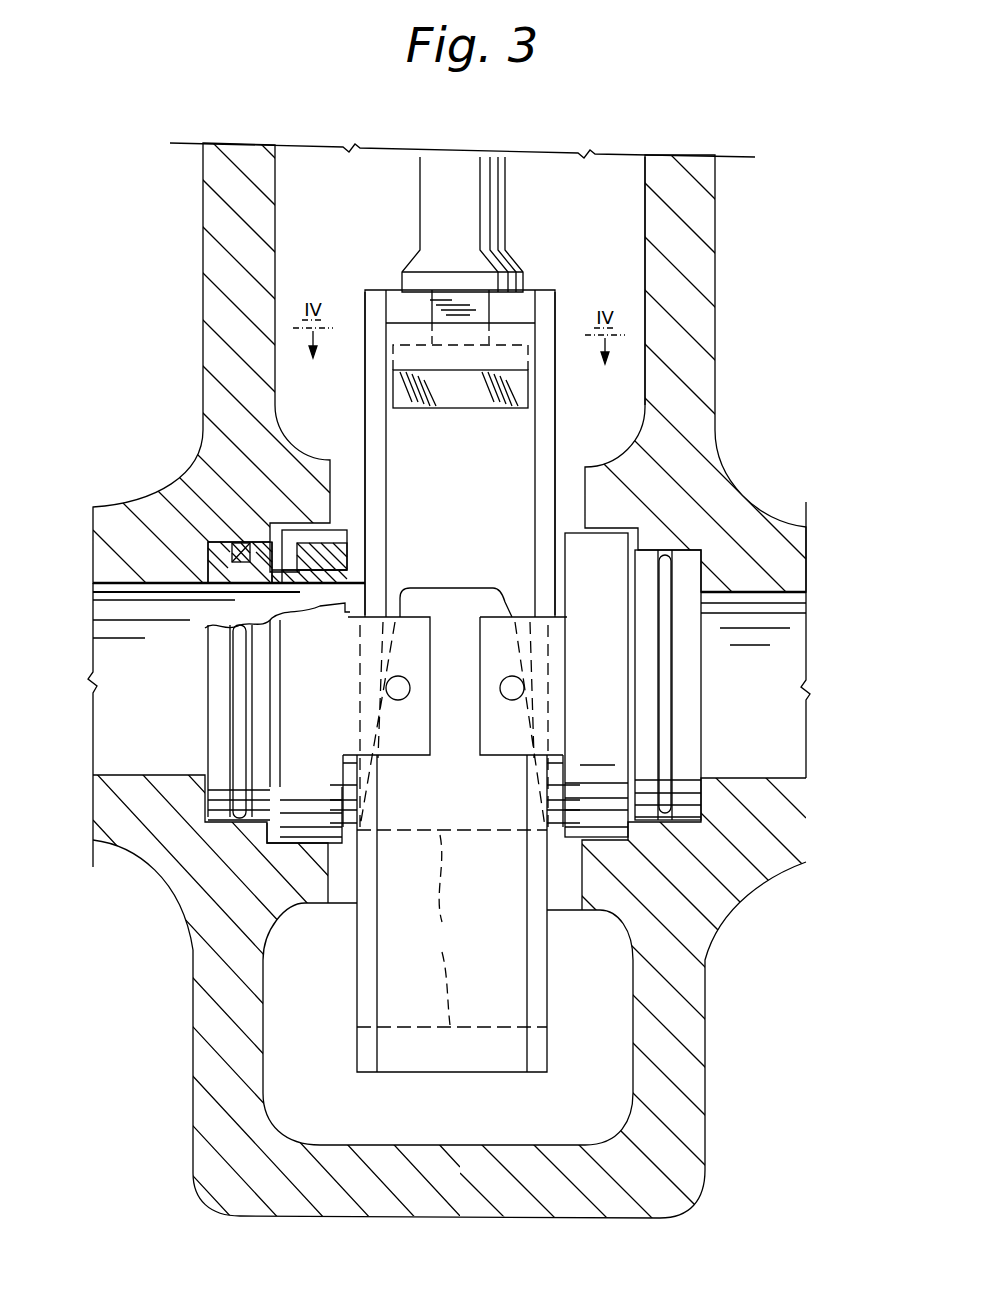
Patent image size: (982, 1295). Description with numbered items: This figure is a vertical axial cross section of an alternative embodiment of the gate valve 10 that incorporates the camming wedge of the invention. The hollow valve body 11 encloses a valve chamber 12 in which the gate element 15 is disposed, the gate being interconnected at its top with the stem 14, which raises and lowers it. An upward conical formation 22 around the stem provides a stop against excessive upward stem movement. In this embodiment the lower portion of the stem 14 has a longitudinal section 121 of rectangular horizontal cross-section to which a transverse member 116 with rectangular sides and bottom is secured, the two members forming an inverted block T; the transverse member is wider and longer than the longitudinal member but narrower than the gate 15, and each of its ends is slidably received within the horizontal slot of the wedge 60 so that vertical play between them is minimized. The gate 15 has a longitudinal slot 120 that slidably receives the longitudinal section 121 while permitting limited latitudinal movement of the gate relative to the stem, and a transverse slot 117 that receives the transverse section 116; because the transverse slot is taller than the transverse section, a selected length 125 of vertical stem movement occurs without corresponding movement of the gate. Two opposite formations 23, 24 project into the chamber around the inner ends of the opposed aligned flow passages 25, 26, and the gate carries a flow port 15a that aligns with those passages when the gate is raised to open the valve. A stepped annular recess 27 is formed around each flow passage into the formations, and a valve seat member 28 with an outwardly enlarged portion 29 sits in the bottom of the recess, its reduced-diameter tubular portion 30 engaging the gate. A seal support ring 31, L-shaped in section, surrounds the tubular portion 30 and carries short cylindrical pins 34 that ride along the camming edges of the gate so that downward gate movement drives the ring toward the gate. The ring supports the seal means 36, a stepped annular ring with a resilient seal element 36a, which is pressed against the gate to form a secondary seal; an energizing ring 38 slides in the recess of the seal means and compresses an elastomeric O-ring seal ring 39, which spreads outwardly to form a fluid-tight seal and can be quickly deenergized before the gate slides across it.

The gate valve 10 is at (717, 204).
The valve body 11 is at (717, 379).
The valve chamber 12 is at (645, 258).
The stem 14 is at (454, 162).
The gate element 15 is at (420, 1055).
The flow port 15a is at (448, 930).
The upward conical formation 22 is at (408, 262).
The formation 23 is at (363, 478).
The formation 24 is at (548, 470).
The flow passage 25 is at (112, 758).
The flow passage 26 is at (765, 780).
The stepped annular recess 27 is at (225, 562).
The valve seat member 28 is at (403, 600).
The outwardly enlarged portion 29 is at (237, 545).
The tubular portion 30 is at (345, 605).
The seal support ring 31 is at (350, 516).
The cylindrical pin 34 is at (500, 688).
The seal means 36 is at (362, 536).
The annular resilient seal element 36a is at (367, 560).
The energizing ring 38 is at (317, 562).
The seal ring 39 is at (330, 565).
The wedge 60 is at (475, 442).
The transverse member 116 is at (518, 388).
The transverse slot 117 is at (523, 358).
The longitudinal slot 120 is at (487, 310).
The longitudinal section 121 is at (430, 310).
The selected length 125 is at (392, 360).